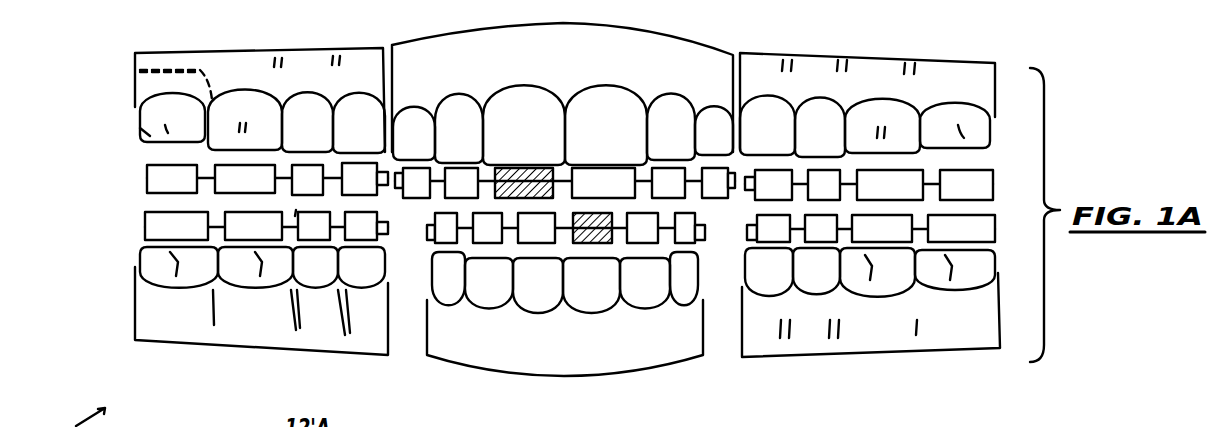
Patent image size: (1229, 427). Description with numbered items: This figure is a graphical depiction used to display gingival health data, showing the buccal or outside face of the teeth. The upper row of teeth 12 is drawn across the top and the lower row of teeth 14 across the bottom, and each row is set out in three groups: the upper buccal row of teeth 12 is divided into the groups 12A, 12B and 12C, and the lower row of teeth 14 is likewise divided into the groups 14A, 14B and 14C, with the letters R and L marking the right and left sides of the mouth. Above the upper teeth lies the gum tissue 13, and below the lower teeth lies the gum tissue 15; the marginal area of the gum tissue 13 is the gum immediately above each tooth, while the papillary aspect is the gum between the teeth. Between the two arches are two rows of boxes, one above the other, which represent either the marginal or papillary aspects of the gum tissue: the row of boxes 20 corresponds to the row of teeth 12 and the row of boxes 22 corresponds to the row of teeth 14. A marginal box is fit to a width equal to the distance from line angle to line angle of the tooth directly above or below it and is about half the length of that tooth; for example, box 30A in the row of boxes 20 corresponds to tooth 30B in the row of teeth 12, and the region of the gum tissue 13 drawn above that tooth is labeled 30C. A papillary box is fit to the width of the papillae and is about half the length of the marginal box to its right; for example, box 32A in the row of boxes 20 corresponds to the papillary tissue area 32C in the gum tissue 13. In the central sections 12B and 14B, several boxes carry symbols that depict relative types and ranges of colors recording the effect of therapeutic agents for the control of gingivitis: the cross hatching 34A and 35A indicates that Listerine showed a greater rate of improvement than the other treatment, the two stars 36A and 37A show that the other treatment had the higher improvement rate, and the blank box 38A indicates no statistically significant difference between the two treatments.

The upper row of teeth 12 is at (137, 124).
The group of teeth 12A is at (241, 86).
The group of teeth 12B is at (562, 85).
The group of teeth 12C is at (911, 55).
The gum tissue 13 is at (137, 70).
The lower row of teeth 14 is at (135, 269).
The group of teeth 14A is at (240, 320).
The group of teeth 14B is at (565, 330).
The group of teeth 14C is at (840, 358).
The gum tissue 15 is at (150, 318).
The row of boxes 20 is at (546, 181).
The row of boxes 22 is at (145, 232).
The box 30A is at (172, 180).
The tooth 30B is at (172, 116).
The crown preparation 30C is at (163, 70).
The box 32A is at (245, 180).
The papillary tissue area 32C is at (215, 72).
The cross hatching 34A is at (525, 166).
The cross hatching 35A is at (595, 245).
The two stars 36A is at (601, 166).
The two stars 37A is at (545, 245).
The blank box 38A is at (671, 166).